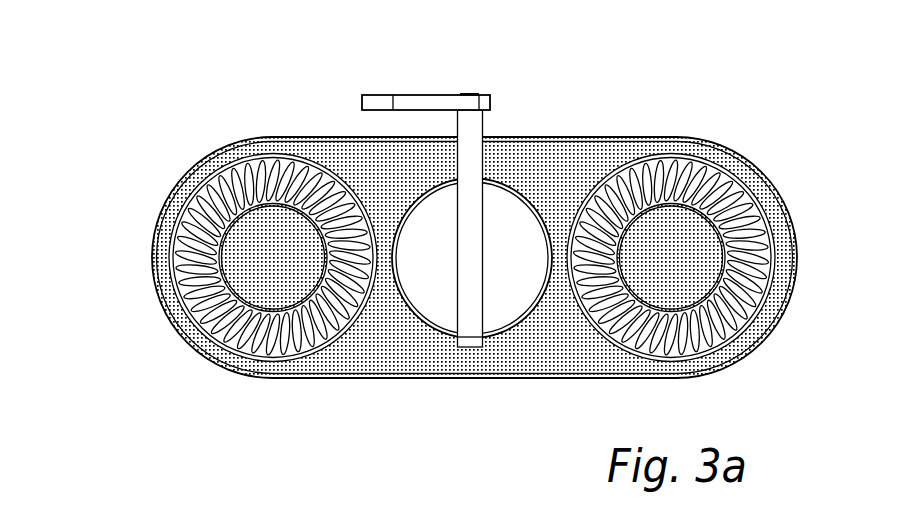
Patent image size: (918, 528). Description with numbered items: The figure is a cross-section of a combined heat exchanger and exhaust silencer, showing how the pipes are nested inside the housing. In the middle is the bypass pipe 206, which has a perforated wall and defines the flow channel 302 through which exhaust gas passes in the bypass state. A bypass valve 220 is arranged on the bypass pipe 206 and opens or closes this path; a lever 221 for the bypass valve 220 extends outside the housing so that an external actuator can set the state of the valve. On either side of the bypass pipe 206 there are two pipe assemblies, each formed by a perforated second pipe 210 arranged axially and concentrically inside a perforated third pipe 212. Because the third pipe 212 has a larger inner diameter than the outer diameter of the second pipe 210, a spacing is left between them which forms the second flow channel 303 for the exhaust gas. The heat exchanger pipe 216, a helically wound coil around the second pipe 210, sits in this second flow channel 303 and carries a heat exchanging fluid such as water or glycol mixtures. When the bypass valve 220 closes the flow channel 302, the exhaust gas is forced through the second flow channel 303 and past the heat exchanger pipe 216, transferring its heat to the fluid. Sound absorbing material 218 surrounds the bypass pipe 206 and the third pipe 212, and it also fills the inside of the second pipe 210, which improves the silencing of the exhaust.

The bypass pipe 206 is at (547, 227).
The second pipe 210 is at (178, 262).
The third pipe 212 is at (288, 148).
The heat exchanger pipe 216 is at (187, 181).
The sound absorbing material 218 is at (270, 278).
The bypass valve 220 is at (470, 213).
The lever 221 is at (412, 95).
The flow channel 302 is at (535, 272).
The second flow channel 303 is at (258, 163).